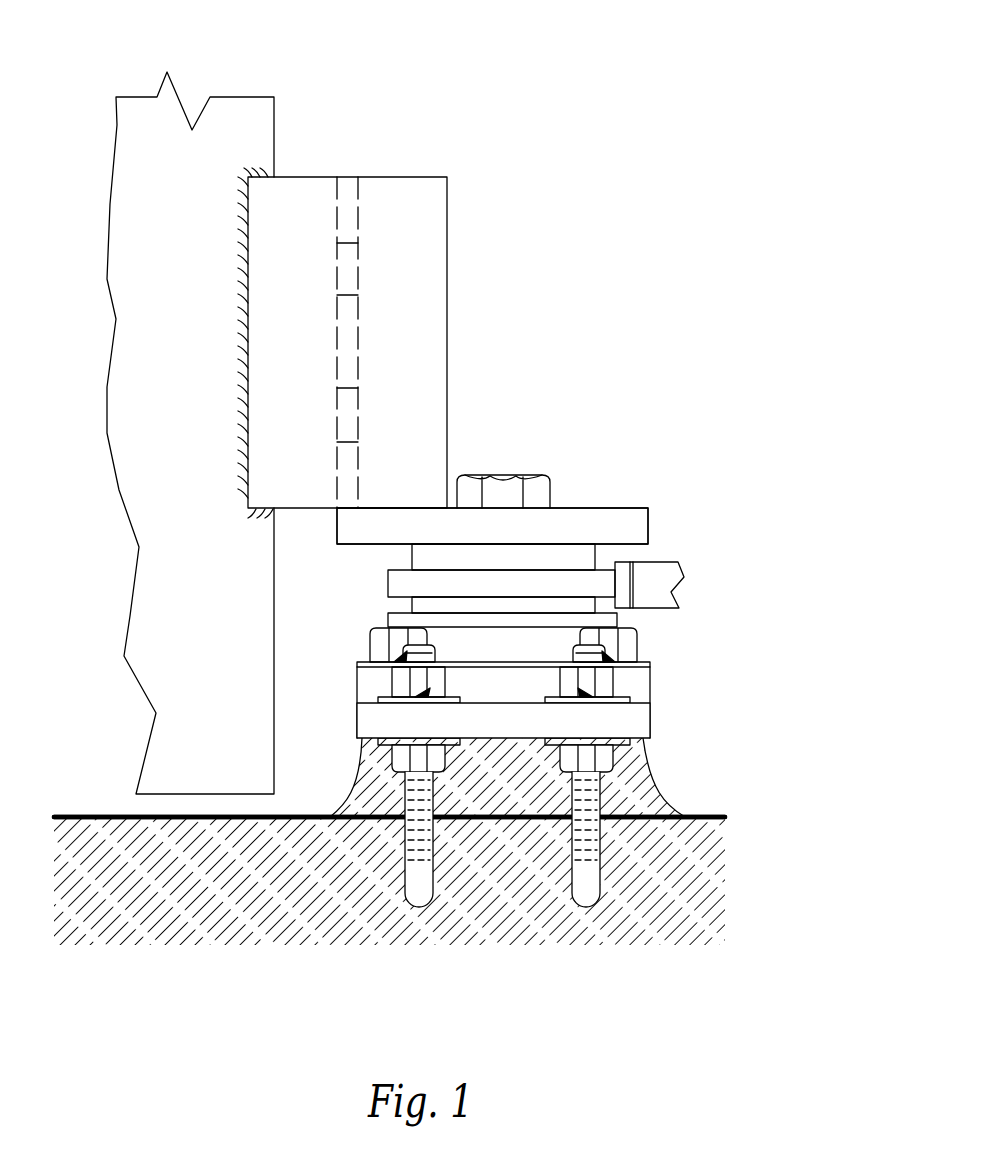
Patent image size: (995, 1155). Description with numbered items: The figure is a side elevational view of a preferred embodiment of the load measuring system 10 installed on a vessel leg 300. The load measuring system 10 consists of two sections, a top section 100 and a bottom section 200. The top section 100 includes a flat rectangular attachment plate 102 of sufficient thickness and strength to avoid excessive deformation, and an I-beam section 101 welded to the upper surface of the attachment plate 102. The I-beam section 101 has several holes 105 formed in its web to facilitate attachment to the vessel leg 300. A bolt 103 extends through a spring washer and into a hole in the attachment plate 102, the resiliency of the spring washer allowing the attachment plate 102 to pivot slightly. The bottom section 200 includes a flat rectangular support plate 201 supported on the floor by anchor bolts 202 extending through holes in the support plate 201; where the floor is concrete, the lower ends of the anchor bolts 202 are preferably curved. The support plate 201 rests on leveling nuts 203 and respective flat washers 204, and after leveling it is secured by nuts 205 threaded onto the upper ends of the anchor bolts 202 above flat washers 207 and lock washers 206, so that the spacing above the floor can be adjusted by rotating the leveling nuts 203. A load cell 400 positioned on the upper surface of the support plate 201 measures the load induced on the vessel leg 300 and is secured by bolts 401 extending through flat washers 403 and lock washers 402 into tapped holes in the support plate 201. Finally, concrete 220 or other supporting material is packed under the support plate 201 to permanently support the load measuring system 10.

The load measuring system 10 is at (603, 166).
The top section 100 is at (569, 370).
The I-beam section 101 is at (448, 208).
The attachment plate 102 is at (648, 525).
The bolt 103 is at (550, 490).
The holes 105 is at (353, 292).
The bottom section 200 is at (763, 815).
The support plate 201 is at (355, 728).
The anchor bolts 202 is at (395, 793).
The leveling nuts 203 is at (383, 760).
The flat washers 204 is at (372, 745).
The nuts 205 is at (357, 673).
The lock washers 206 is at (357, 693).
The flat washers 207 is at (357, 703).
The concrete 220 is at (654, 800).
The vessel leg 300 is at (233, 93).
The load cell 400 is at (364, 567).
The bolts 401 is at (371, 657).
The lock washers 402 is at (363, 660).
The flat washers 403 is at (356, 665).